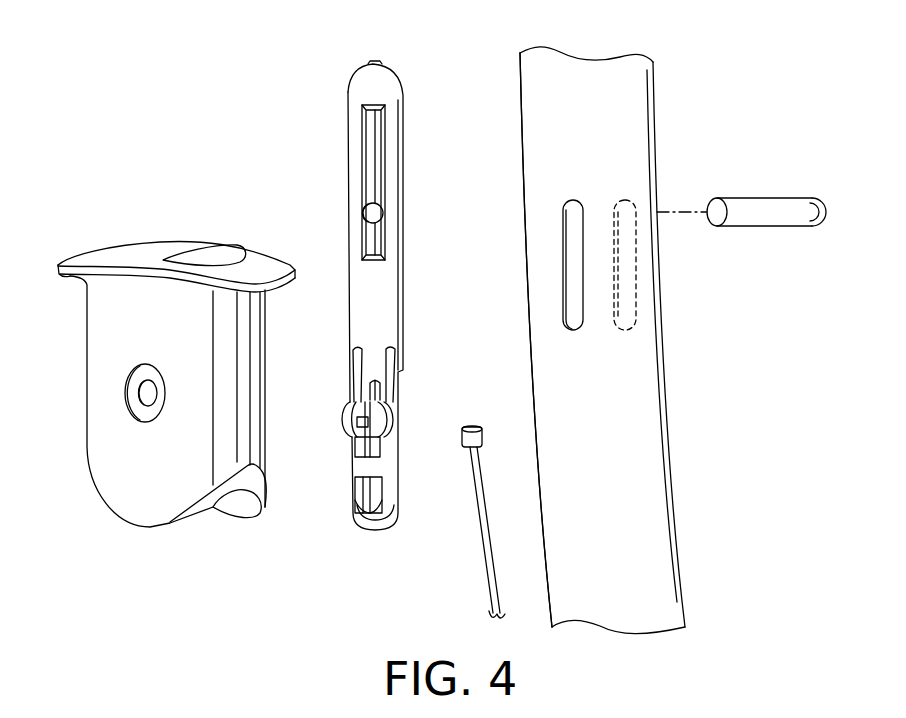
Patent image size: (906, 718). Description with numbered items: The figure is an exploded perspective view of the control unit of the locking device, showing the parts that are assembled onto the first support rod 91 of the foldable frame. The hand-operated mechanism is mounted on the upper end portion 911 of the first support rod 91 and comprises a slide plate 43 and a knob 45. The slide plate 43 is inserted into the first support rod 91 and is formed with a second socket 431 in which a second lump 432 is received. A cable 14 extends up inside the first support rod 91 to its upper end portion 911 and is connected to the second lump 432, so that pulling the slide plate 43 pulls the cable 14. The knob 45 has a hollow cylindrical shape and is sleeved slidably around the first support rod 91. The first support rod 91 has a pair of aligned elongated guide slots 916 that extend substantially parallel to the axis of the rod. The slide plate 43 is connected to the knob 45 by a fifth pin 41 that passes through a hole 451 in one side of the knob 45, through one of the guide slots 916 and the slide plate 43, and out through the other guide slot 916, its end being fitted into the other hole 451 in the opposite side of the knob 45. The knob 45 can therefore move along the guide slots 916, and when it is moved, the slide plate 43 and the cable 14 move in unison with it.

The cable 14 is at (480, 518).
The fifth pin 41 is at (765, 202).
The slide plate 43 is at (365, 92).
The knob 45 is at (102, 325).
The first support rod 91 is at (668, 502).
The second socket 431 is at (358, 490).
The second lump 432 is at (473, 432).
The hole 451 is at (143, 392).
The upper end portion 911 is at (550, 163).
The elongated guide slots 916 is at (572, 220).